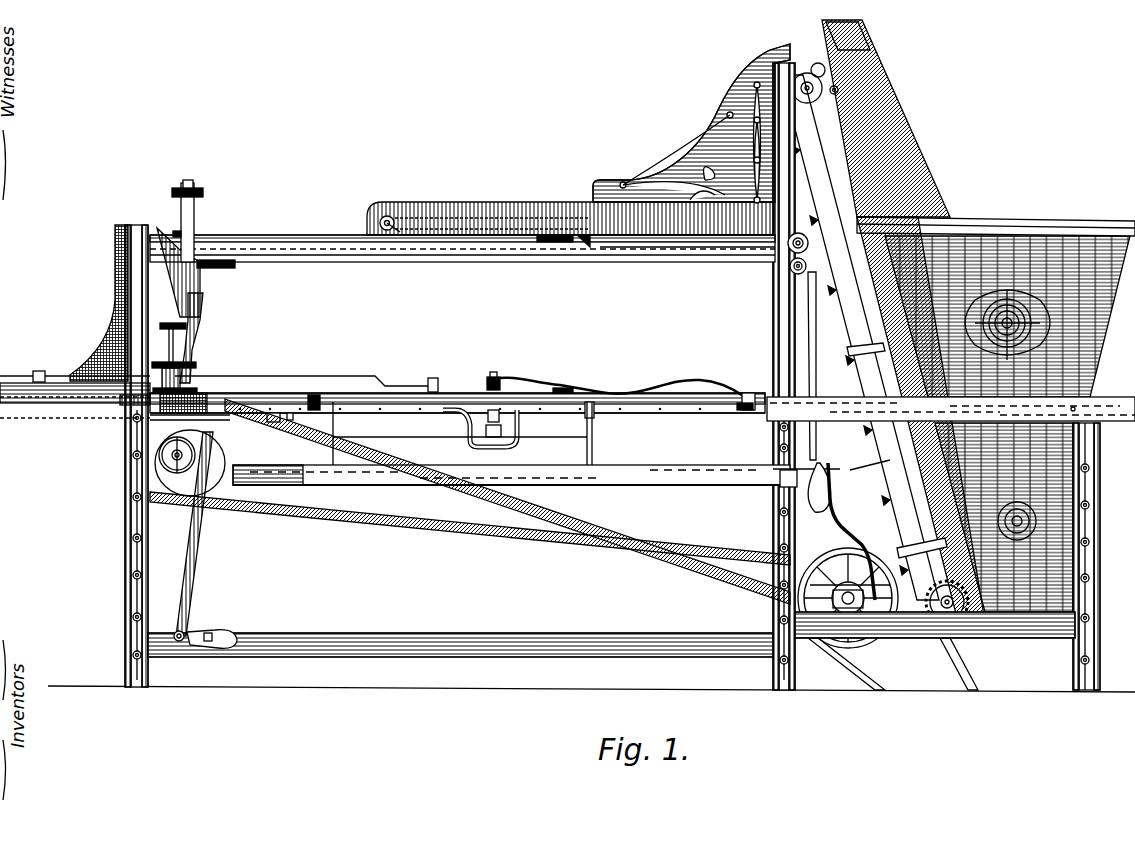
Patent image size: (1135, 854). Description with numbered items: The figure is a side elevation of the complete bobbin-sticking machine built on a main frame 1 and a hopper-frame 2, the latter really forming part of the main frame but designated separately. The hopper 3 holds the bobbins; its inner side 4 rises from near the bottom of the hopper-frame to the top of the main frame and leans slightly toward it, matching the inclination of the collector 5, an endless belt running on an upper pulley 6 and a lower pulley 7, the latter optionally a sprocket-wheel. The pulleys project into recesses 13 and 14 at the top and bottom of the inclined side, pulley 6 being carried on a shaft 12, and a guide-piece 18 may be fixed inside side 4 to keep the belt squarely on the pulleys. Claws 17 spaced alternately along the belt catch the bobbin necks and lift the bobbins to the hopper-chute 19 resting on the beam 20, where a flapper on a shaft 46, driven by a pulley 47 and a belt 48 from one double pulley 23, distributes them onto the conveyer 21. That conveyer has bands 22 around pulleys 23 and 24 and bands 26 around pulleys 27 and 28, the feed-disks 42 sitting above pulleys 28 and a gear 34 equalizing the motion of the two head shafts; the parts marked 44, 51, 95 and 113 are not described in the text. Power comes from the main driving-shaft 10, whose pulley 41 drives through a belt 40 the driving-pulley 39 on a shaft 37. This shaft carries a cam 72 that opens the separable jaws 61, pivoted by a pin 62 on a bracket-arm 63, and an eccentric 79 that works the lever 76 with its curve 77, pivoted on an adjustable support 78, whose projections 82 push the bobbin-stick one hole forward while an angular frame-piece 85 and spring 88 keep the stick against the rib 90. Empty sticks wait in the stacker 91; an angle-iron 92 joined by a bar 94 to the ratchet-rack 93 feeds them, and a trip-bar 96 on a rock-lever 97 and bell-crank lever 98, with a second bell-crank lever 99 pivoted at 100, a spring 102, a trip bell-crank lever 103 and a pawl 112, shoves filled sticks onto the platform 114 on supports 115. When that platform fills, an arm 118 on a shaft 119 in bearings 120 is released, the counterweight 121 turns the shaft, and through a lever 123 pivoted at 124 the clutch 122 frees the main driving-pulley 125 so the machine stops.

The main frame 1 is at (773, 337).
The hopper-frame 2 is at (1115, 401).
The hopper 3 is at (1105, 310).
The inner side 4 is at (862, 250).
The collector 5 is at (808, 195).
The pulley 6 is at (812, 104).
The pulley 7 is at (928, 623).
The main driving-shaft 10 is at (850, 608).
The shaft 12 is at (838, 88).
The recess 13 is at (848, 70).
The recess 14 is at (1020, 556).
The claws 17 is at (860, 352).
The guide-piece 18 is at (884, 476).
The hopper-chute 19 is at (708, 150).
The beam 20 is at (672, 262).
The conveyer 21 is at (480, 260).
The bands 22 is at (622, 250).
The pulleys 23 is at (790, 255).
The pulleys 24 is at (792, 273).
The bands 26 is at (332, 243).
The pulleys 27 is at (568, 244).
The pulleys 28 is at (178, 236).
The gear 34 is at (204, 192).
The shaft 37 is at (172, 458).
The driving-pulley 39 is at (212, 490).
The belt 40 is at (507, 501).
The pulley 41 is at (860, 570).
The feed-disks 42 is at (182, 234).
The bracket 44 is at (168, 270).
The shaft 46 is at (383, 237).
The pulley 47 is at (390, 230).
The belt 48 is at (400, 220).
The post 51 is at (196, 220).
The separable jaws 61 is at (200, 352).
The pin 62 is at (169, 344).
The bracket-arm 63 is at (160, 326).
The cam 72 is at (160, 455).
The lever 76 is at (198, 534).
The curve 77 is at (200, 448).
The adjustable support 78 is at (218, 634).
The eccentric 79 is at (160, 470).
The projections 82 is at (185, 391).
The angular frame-piece 85 is at (196, 366).
The spring 88 is at (130, 407).
The rib 90 is at (326, 395).
The stacker 91 is at (118, 302).
The flat angle-iron 92 is at (75, 368).
The ratchet-toothed rack 93 is at (520, 383).
The bar 94 is at (330, 375).
The block 95 is at (750, 393).
The trip-bar 96 is at (545, 418).
The rock-lever 97 is at (487, 383).
The bell-crank lever 98 is at (592, 413).
The bell-crank lever 99 is at (292, 424).
The pivot 100 is at (273, 422).
The spring 102 is at (587, 418).
The trip bell-crank lever 103 is at (746, 411).
The pawl 112 is at (565, 388).
The rod 113 is at (410, 437).
The bobbin-stick platform 114 is at (333, 415).
The supports 115 is at (334, 446).
The arm 118 is at (585, 485).
The shaft 119 is at (660, 470).
The bearings 120 is at (780, 468).
The counterweight 121 is at (815, 512).
The clutch 122 is at (820, 600).
The lever 123 is at (846, 520).
The pivot 124 is at (773, 572).
The main driving-pulley 125 is at (851, 664).